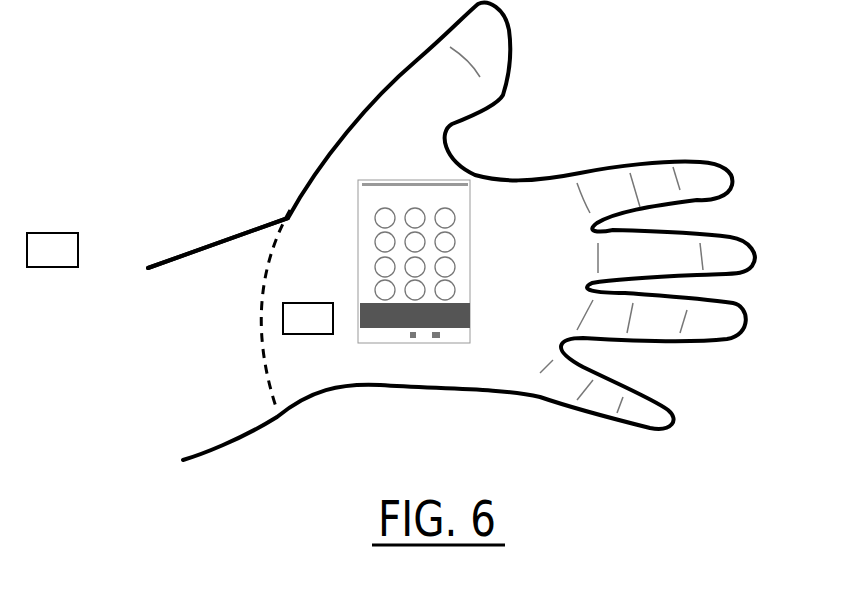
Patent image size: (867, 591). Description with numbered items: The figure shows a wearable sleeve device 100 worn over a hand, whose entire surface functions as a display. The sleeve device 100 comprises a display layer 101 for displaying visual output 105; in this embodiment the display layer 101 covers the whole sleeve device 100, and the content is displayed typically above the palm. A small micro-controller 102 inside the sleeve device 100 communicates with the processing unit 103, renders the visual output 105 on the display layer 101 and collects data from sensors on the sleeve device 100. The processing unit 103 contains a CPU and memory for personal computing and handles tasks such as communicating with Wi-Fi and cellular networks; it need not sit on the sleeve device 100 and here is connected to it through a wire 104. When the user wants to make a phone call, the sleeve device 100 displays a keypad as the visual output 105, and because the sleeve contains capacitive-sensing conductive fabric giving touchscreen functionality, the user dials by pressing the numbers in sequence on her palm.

The wearable sleeve device 100 is at (258, 93).
The display layer 101 is at (373, 388).
The micro-controller 102 is at (308, 318).
The processing unit 103 is at (283, 317).
The wire 104 is at (143, 253).
The visual output 105 is at (478, 298).